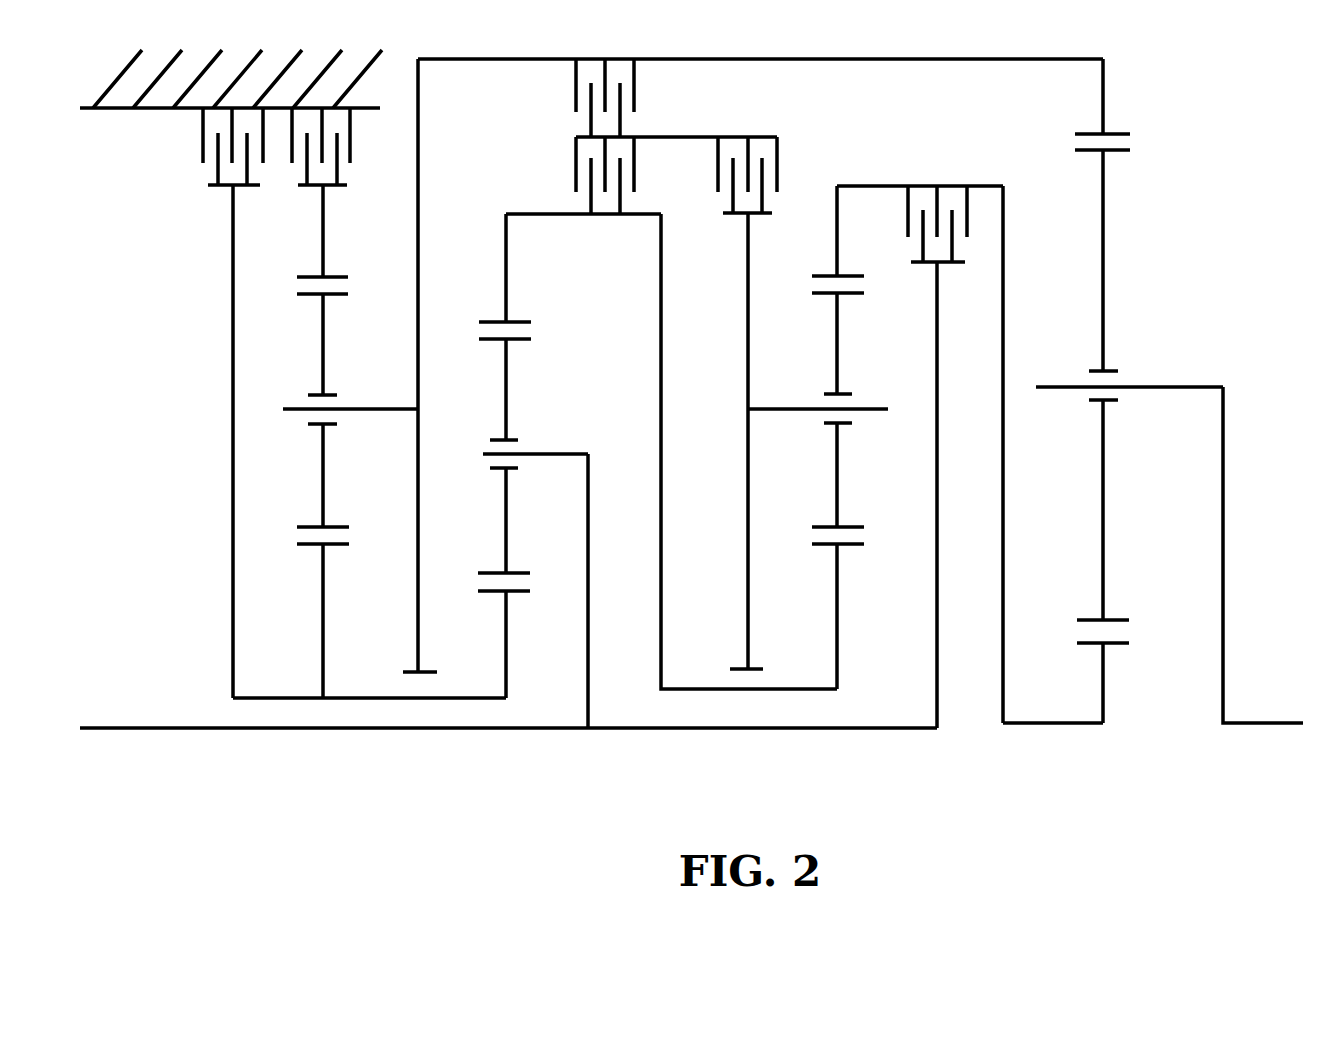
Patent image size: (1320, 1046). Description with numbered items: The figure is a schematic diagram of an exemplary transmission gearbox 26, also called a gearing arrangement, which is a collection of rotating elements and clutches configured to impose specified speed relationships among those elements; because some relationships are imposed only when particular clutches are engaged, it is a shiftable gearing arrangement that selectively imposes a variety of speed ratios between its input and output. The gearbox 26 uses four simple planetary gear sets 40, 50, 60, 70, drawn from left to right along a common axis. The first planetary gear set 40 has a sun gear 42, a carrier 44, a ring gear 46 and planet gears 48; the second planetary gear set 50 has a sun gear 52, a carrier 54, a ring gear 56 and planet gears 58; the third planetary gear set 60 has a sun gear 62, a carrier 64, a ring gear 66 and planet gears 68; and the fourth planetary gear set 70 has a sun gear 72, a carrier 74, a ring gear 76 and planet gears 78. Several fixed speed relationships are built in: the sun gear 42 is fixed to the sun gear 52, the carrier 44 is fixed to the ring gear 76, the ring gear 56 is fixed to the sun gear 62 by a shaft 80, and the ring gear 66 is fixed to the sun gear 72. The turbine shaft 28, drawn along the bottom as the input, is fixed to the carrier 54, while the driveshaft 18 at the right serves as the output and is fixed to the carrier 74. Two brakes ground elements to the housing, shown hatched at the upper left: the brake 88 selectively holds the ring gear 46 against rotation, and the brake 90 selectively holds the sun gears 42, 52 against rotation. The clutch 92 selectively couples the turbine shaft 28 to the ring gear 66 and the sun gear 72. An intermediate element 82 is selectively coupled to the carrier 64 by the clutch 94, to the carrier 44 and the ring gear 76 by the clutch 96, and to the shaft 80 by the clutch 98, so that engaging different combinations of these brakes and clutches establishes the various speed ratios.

The driveshaft 18 is at (1248, 723).
The gearbox 26 is at (738, 745).
The turbine shaft 28 is at (212, 732).
The planetary gear set 40 is at (369, 429).
The sun gear 42 is at (323, 640).
The carrier 44 is at (418, 162).
The ring gear 46 is at (323, 258).
The planet gears 48 is at (323, 370).
The planetary gear set 50 is at (554, 507).
The sun gear 52 is at (506, 659).
The carrier 54 is at (588, 597).
The ring gear 56 is at (506, 280).
The planet gears 58 is at (506, 413).
The planetary gear set 60 is at (849, 493).
The sun gear 62 is at (838, 627).
The carrier 64 is at (748, 321).
The ring gear 66 is at (837, 212).
The planet gears 68 is at (838, 365).
The planetary gear set 70 is at (1113, 574).
The sun gear 72 is at (1103, 704).
The carrier 74 is at (1138, 387).
The ring gear 76 is at (1103, 122).
The planet gears 78 is at (1103, 262).
The shaft 80 is at (661, 410).
The intermediate element 82 is at (651, 137).
The brake 88 is at (350, 133).
The brake 90 is at (203, 133).
The clutch 92 is at (943, 183).
The clutch 94 is at (730, 132).
The clutch 96 is at (576, 73).
The clutch 98 is at (576, 147).